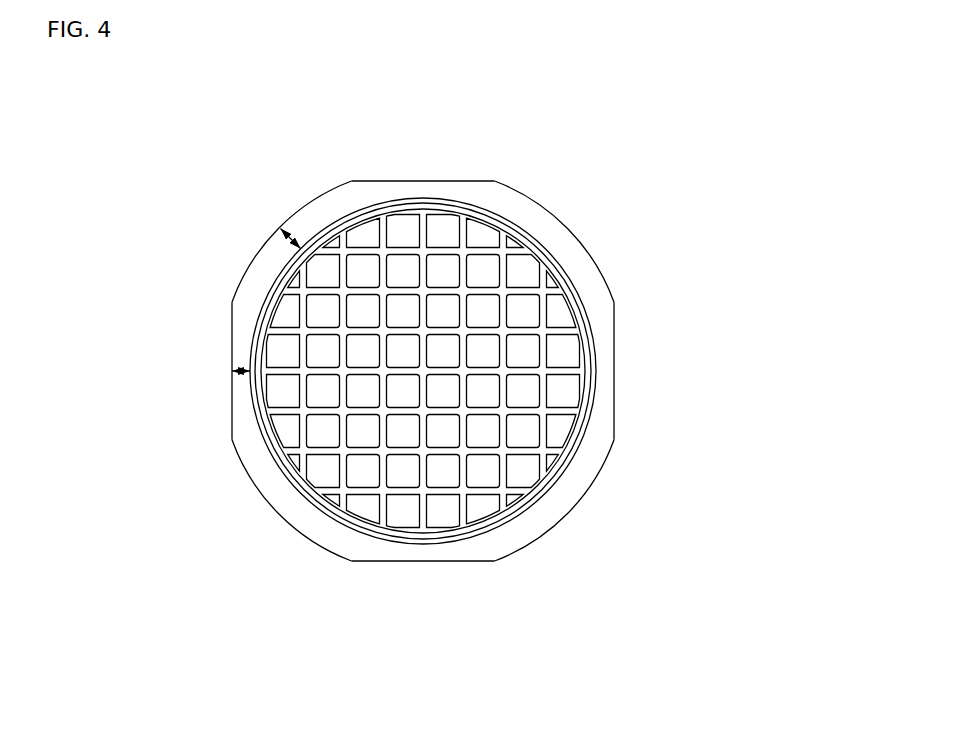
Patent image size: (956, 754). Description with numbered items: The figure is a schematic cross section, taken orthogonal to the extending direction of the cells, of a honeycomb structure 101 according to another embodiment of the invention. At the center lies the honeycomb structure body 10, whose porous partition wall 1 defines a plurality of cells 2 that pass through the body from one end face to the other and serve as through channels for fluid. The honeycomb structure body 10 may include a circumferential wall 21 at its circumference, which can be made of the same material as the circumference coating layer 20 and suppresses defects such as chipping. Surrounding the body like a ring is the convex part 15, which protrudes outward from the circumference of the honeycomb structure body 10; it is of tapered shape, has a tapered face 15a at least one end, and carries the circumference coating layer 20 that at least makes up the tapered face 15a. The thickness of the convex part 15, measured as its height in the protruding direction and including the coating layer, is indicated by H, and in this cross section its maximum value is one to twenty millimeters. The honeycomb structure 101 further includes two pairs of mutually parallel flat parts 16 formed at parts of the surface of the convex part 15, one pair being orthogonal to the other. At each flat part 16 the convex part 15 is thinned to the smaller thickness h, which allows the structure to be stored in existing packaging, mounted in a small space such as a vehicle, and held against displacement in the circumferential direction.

The honeycomb structure 101 is at (652, 103).
The partition wall 1 is at (333, 452).
The cells 2 is at (530, 353).
The honeycomb structure body 10 is at (542, 258).
The convex part 15 is at (608, 284).
The tapered face 15a is at (553, 512).
The flat part 16 is at (615, 332).
The circumference coating layer 20 is at (600, 426).
The circumferential wall 21 is at (578, 458).
The thickness of the convex part H is at (297, 240).
The thickness of the convex part at the flat part h is at (242, 368).